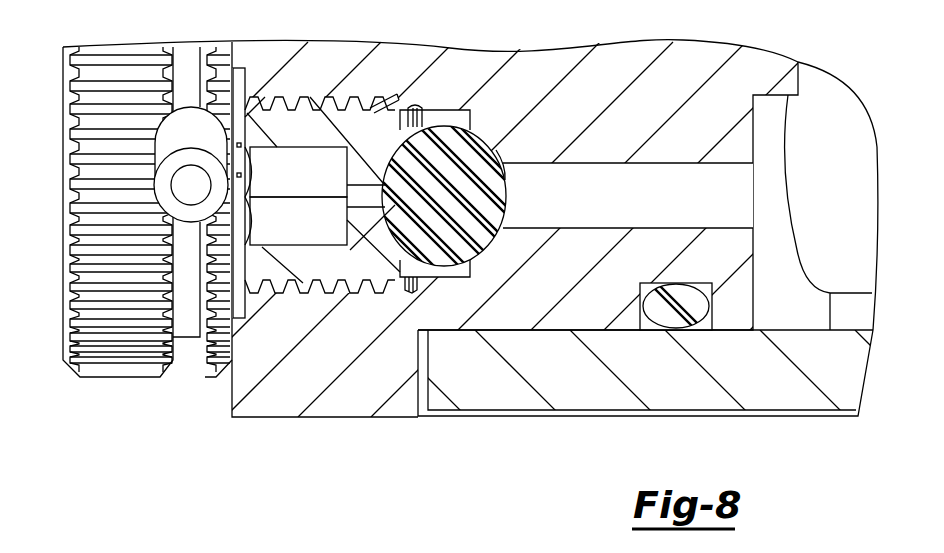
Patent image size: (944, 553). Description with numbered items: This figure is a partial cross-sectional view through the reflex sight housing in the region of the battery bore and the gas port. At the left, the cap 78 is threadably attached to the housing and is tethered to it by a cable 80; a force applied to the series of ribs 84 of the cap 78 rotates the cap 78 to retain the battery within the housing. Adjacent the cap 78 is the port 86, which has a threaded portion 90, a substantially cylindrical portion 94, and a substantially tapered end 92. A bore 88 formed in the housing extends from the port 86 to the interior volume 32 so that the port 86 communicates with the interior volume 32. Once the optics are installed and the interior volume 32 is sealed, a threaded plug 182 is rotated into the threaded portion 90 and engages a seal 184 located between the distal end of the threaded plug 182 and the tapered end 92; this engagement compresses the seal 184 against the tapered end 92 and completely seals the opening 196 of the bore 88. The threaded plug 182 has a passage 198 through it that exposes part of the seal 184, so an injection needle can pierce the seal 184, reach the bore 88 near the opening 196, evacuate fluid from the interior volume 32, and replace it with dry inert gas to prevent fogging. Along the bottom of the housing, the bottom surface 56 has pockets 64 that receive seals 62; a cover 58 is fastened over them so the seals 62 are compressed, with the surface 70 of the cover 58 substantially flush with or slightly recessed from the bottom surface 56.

The cap 78 is at (125, 196).
The cable 80 is at (187, 190).
The ribs 84 is at (93, 226).
The threaded portion 90 is at (337, 98).
The passage 198 is at (362, 200).
The cylindrical portion 94 is at (399, 133).
The port 86 is at (450, 120).
The opening 196 is at (503, 166).
The seal 184 is at (480, 207).
The bore 88 is at (675, 187).
The interior volume 32 is at (820, 102).
The pockets 64 is at (647, 290).
The tapered end 92 is at (467, 262).
The threaded plug 182 is at (352, 273).
The bottom surface 56 is at (402, 418).
The cover 58 is at (585, 393).
The surface 70 is at (623, 408).
The seals 62 is at (678, 318).